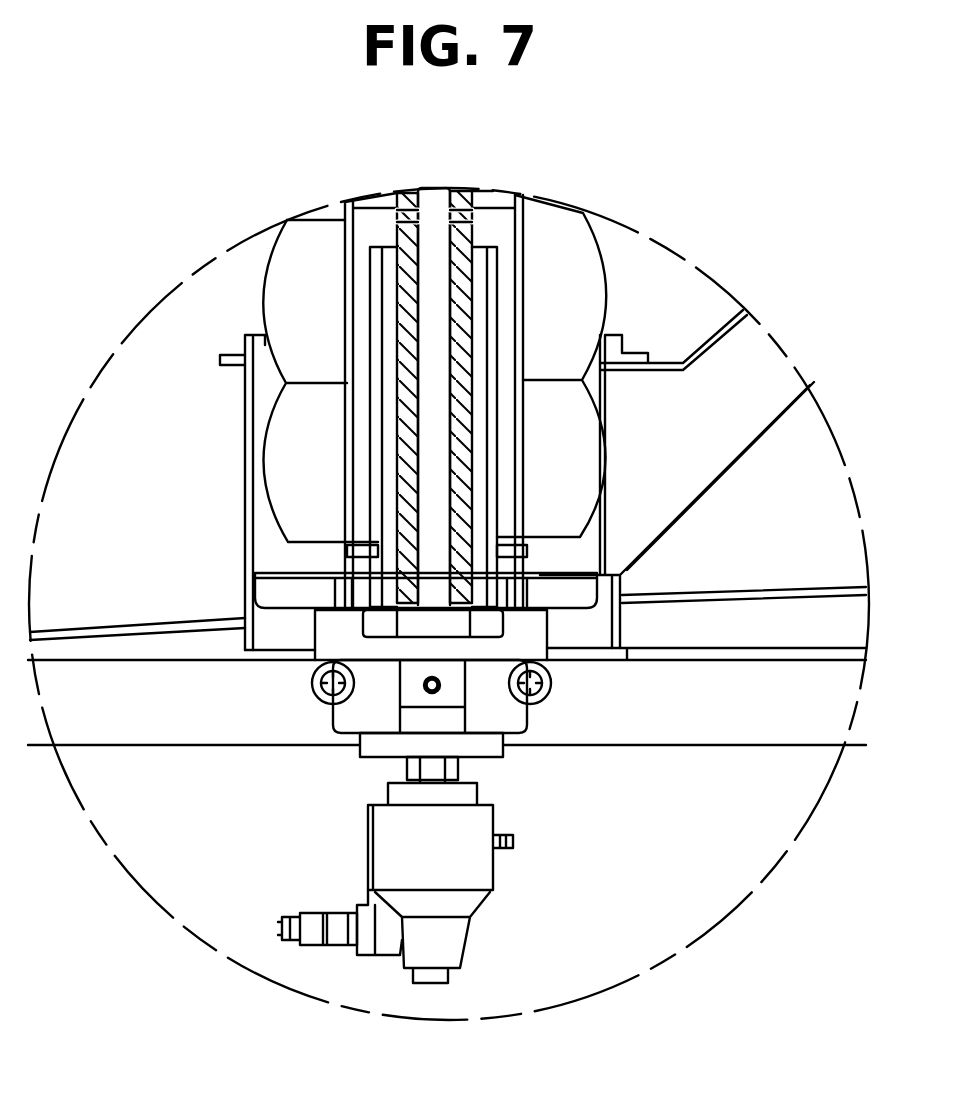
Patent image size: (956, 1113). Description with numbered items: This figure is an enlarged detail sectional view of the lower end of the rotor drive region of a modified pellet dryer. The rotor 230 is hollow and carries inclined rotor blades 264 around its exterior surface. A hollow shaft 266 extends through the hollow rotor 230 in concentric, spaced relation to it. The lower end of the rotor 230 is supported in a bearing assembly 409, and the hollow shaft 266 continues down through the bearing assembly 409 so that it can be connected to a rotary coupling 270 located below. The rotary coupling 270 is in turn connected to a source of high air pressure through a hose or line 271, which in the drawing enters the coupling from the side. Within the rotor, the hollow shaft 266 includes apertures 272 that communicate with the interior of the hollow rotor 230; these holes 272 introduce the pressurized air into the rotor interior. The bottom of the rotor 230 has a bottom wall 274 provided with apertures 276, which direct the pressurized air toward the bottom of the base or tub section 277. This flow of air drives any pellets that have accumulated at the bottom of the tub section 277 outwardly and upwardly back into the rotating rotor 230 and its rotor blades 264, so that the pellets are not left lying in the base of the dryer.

The rotor 230 is at (350, 300).
The inclined rotor blades 264 is at (283, 250).
The hollow shaft 266 is at (460, 297).
The rotary coupling 270 is at (473, 870).
The hose or line 271 is at (288, 918).
The apertures 272 is at (465, 210).
The bottom wall 274 is at (380, 557).
The apertures 276 is at (370, 540).
The base or tub section 277 is at (250, 450).
The bearing assembly 409 is at (515, 713).